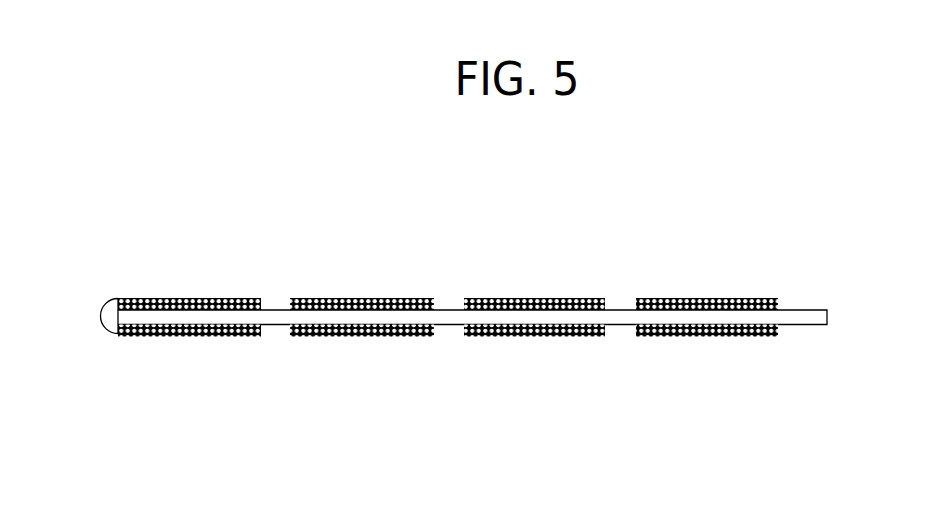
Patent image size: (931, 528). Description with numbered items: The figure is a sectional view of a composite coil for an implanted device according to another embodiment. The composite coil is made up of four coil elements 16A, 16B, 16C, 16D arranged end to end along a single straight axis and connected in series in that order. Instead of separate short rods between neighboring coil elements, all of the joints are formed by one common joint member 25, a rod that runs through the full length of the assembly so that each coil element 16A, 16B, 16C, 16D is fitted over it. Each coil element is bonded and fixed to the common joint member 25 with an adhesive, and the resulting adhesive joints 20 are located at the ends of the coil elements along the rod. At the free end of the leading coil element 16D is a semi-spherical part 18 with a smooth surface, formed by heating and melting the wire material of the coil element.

The coil element 16A is at (680, 298).
The coil element 16B is at (540, 299).
The coil element 16C is at (332, 298).
The leading coil element 16D is at (170, 298).
The semi-spherical part 18 is at (100, 311).
The adhesive joint 20 is at (289, 299).
The common joint member 25 is at (452, 325).